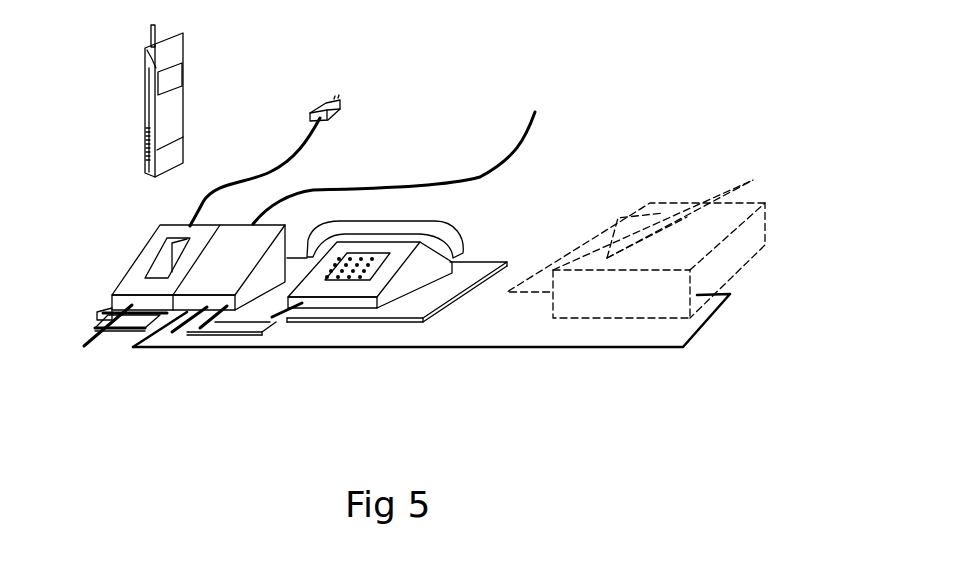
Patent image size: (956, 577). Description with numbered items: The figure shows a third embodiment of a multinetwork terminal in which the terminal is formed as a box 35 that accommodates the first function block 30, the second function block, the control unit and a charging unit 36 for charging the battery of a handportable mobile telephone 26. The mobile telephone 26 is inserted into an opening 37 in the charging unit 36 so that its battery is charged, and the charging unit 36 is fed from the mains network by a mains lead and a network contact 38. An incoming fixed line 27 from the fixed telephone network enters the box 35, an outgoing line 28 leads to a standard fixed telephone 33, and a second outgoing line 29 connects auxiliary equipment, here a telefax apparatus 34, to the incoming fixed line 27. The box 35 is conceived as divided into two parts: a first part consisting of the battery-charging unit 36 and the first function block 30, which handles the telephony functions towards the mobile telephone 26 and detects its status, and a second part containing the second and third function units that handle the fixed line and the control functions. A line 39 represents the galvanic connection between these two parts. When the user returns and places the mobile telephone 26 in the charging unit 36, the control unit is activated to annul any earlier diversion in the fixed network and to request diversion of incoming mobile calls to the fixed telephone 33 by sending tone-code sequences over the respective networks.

The mobile telephone 26 is at (145, 100).
The incoming fixed line 27 is at (520, 147).
The outgoing line 28 is at (217, 332).
The second outgoing line 29 is at (403, 345).
The first function block 30 is at (231, 219).
The fixed telephone 33 is at (443, 248).
The telefax apparatus 34 is at (667, 203).
The box 35 is at (401, 260).
The charging unit 36 is at (142, 266).
The opening 37 is at (173, 257).
The network contact 38 is at (317, 105).
The galvanic connection 39 is at (84, 346).